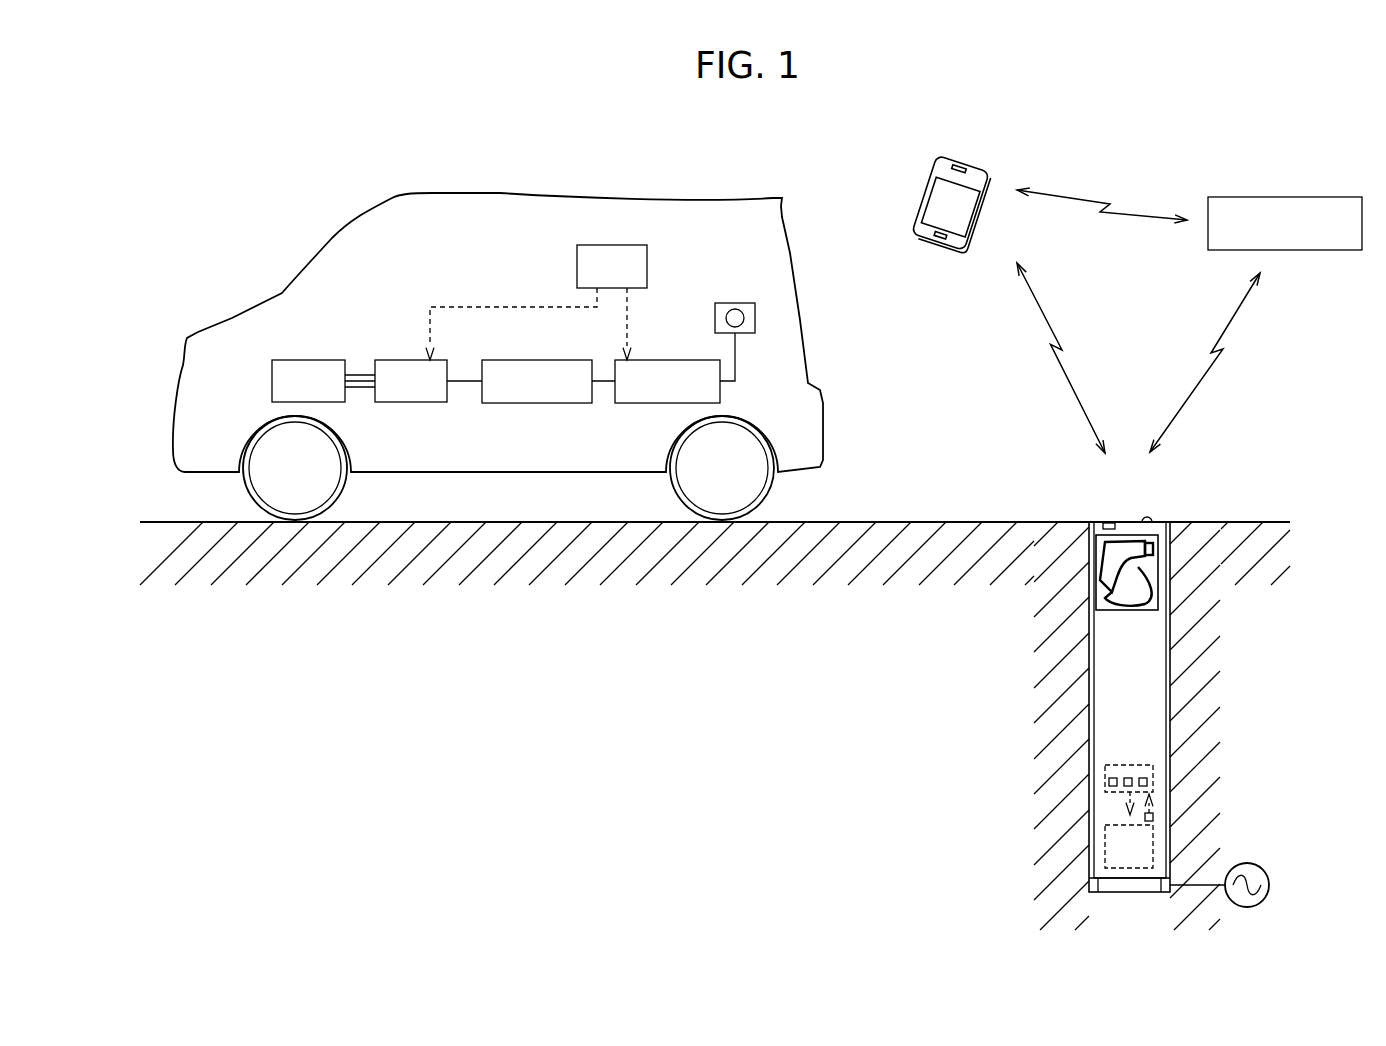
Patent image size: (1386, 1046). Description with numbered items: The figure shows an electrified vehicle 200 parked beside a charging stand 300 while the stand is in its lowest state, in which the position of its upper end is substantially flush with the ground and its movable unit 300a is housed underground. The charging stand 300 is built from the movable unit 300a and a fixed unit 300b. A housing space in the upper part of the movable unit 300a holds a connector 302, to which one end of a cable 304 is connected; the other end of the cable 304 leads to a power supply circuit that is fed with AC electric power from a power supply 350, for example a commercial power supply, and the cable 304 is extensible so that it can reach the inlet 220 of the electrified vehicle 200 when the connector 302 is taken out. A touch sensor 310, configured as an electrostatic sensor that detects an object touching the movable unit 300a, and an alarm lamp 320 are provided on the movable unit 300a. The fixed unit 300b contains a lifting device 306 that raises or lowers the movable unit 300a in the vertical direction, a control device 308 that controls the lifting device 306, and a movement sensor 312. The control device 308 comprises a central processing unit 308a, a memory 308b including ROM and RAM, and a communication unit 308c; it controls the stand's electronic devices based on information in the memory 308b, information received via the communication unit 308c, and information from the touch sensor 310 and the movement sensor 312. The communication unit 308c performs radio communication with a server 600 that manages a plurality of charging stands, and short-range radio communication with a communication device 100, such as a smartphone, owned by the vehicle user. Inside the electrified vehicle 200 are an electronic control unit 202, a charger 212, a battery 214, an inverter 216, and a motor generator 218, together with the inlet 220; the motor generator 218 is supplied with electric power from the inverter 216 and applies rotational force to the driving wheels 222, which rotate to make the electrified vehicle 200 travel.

The communication device 100 is at (953, 155).
The electrified vehicle 200 is at (648, 199).
The electronic control unit 202 is at (613, 243).
The charger 212 is at (668, 358).
The battery 214 is at (535, 358).
The inverter 216 is at (390, 358).
The motor generator 218 is at (305, 358).
The inlet 220 is at (735, 302).
The driving wheels 222 is at (351, 452).
The charging stand 300 is at (1164, 467).
The movable unit 300a is at (1162, 519).
The fixed unit 300b is at (1113, 892).
The connector 302 is at (1130, 565).
The cable 304 is at (1132, 612).
The lifting device 306 is at (1153, 845).
The control device 308 is at (1131, 782).
The central processing unit 308a is at (1150, 772).
The memory 308b is at (1125, 770).
The communication unit 308c is at (1113, 790).
The touch sensor 310 is at (1108, 518).
The movement sensor 312 is at (1153, 817).
The alarm lamp 320 is at (1158, 513).
The power supply 350 is at (1270, 885).
The server 600 is at (1305, 197).